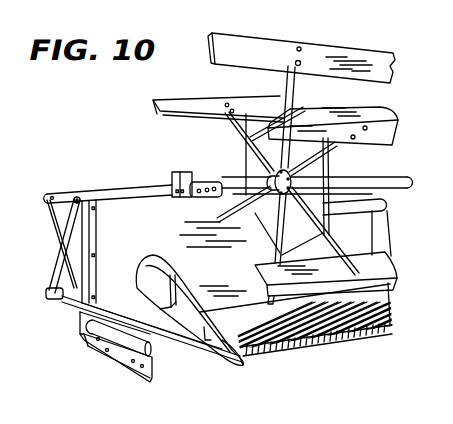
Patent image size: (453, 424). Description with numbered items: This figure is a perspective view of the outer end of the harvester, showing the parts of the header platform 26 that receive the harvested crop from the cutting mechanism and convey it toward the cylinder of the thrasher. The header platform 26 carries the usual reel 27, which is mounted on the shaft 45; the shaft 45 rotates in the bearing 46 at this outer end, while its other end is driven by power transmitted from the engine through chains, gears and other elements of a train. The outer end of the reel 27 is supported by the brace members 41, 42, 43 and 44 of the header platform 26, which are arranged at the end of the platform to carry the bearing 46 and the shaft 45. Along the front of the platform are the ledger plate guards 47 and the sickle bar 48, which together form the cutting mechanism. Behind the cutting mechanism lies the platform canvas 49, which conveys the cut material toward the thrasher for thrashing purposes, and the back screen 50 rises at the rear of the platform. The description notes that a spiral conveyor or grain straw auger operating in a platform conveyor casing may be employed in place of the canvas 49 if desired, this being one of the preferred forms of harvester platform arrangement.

The header platform 26 is at (114, 363).
The reel 27 is at (190, 108).
The brace member 41 is at (68, 306).
The brace member 42 is at (62, 268).
The brace member 43 is at (58, 236).
The brace member 44 is at (143, 166).
The shaft 45 is at (390, 178).
The bearing 46 is at (218, 157).
The ledger plate guards 47 is at (288, 343).
The sickle bar 48 is at (353, 334).
The platform canvas 49 is at (393, 297).
The back screen 50 is at (236, 271).